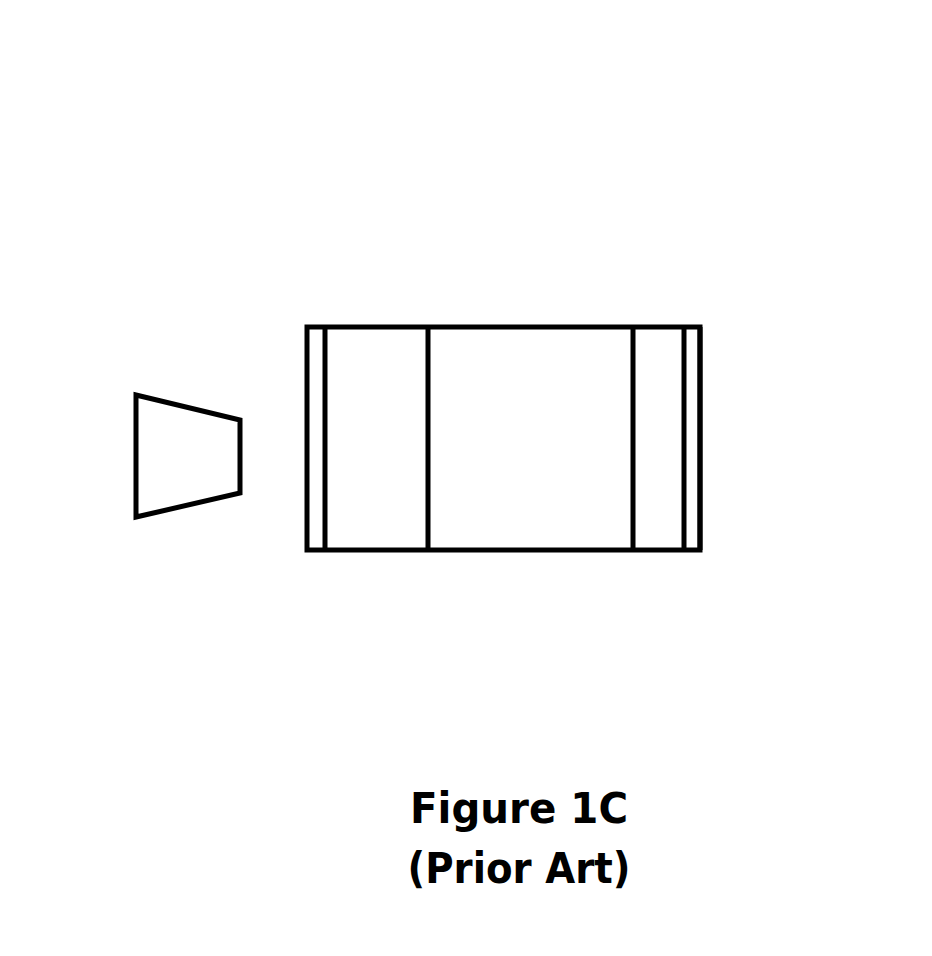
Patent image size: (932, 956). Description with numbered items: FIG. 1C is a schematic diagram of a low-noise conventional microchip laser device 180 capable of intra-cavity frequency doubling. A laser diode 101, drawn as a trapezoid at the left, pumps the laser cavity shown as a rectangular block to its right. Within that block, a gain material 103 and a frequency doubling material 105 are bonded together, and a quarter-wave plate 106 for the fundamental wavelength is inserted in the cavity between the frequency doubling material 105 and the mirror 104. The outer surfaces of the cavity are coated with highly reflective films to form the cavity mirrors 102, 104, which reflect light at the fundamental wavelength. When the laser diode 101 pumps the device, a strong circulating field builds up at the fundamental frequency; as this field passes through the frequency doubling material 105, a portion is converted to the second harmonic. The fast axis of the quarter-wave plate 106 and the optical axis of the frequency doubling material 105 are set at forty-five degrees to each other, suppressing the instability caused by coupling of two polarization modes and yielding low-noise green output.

The low-noise microchip laser device 180 is at (797, 137).
The laser diode 101 is at (153, 457).
The cavity mirror 102 is at (316, 388).
The gain material 103 is at (383, 353).
The frequency doubling material 105 is at (545, 352).
The quarter-wave plate 106 is at (648, 343).
The cavity mirror 104 is at (693, 412).